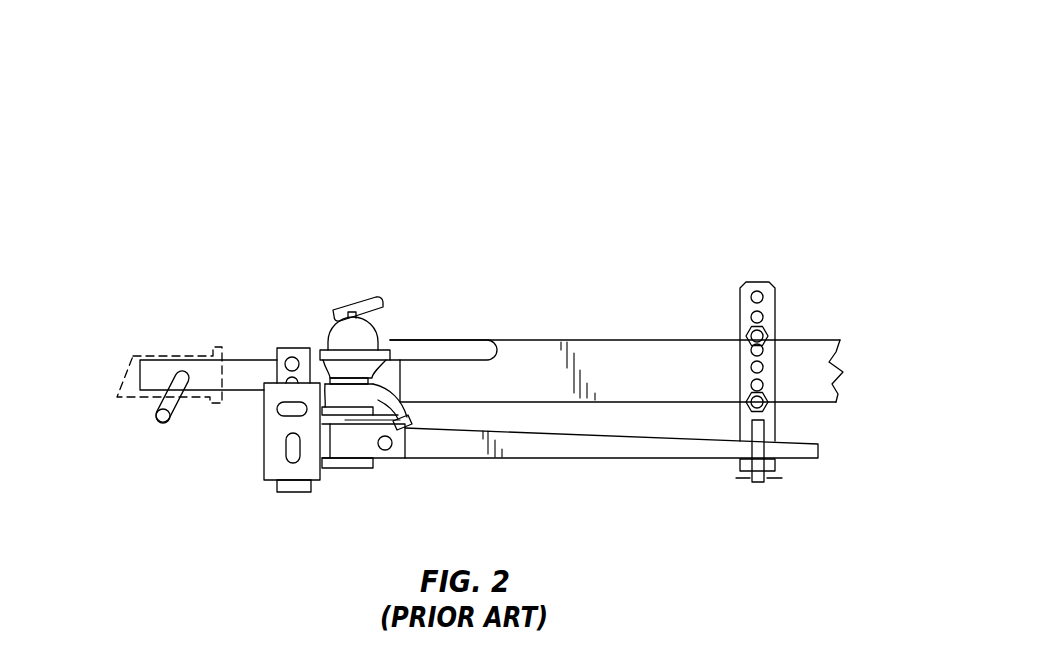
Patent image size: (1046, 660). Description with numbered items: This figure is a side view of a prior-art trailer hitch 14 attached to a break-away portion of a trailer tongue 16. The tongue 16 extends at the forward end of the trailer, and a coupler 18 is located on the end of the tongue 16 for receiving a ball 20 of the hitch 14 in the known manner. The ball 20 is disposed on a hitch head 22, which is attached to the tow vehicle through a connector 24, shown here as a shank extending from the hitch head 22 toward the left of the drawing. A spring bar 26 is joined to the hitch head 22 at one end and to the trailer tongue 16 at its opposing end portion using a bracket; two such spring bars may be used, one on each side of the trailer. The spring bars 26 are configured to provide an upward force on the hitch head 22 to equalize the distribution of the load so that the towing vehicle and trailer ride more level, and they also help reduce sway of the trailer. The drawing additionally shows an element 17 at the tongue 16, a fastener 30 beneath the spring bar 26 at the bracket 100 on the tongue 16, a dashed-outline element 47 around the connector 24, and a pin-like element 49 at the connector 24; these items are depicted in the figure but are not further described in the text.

The hitch 14 is at (591, 170).
The tongue 16 is at (810, 342).
The trailer frame member 17 is at (808, 377).
The coupler 18 is at (350, 313).
The ball 20 is at (353, 370).
The hitch head 22 is at (402, 421).
The connector 24 is at (245, 373).
The spring bar 26 is at (657, 459).
The fastener 30 is at (784, 454).
The receiver 47 is at (117, 397).
The hitch pin 49 is at (163, 422).
The frame bracket 100 is at (772, 298).